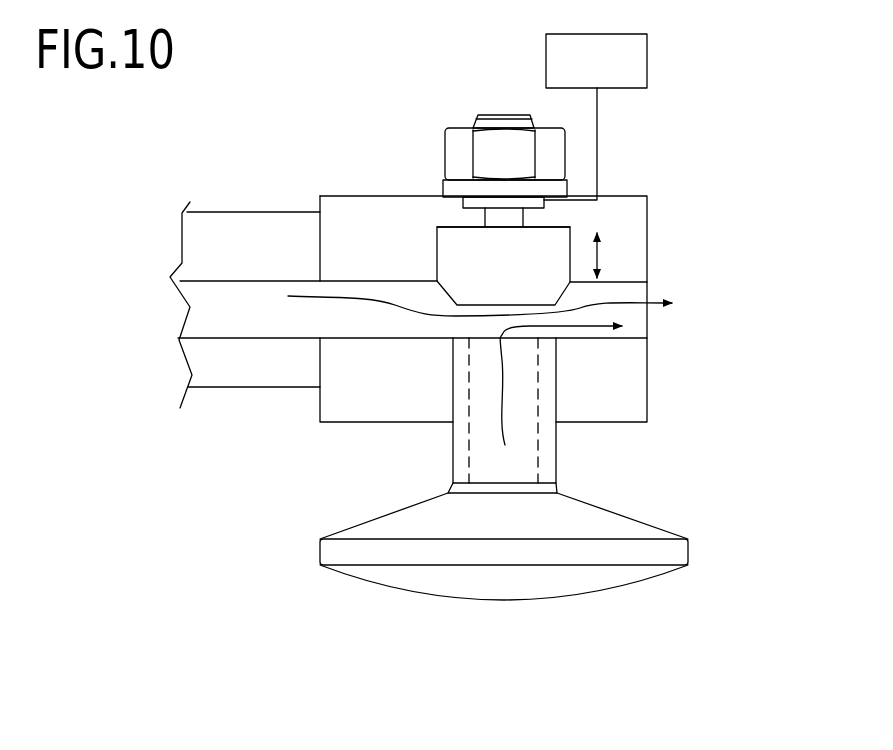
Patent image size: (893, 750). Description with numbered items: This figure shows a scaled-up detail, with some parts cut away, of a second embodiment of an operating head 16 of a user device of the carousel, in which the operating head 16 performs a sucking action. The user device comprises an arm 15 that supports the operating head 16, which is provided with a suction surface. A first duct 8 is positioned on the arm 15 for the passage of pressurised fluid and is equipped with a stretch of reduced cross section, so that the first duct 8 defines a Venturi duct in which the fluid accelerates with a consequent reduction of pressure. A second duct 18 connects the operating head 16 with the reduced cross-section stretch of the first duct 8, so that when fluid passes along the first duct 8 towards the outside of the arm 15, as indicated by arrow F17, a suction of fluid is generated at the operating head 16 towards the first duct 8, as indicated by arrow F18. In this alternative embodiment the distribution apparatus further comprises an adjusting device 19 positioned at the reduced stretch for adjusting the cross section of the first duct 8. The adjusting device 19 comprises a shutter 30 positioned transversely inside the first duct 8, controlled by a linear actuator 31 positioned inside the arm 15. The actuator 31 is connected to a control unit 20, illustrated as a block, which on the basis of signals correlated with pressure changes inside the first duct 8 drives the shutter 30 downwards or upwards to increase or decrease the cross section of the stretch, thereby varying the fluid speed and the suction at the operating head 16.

The first duct 8 is at (217, 313).
The arm 15 is at (215, 242).
The operating head 16 is at (647, 527).
The second duct 18 is at (520, 463).
The adjusting device 19 is at (532, 219).
The control unit 20 is at (603, 72).
The shutter 30 is at (467, 262).
The linear actuator 31 is at (492, 217).
The arrow F17 is at (617, 300).
The arrow F18 is at (503, 393).